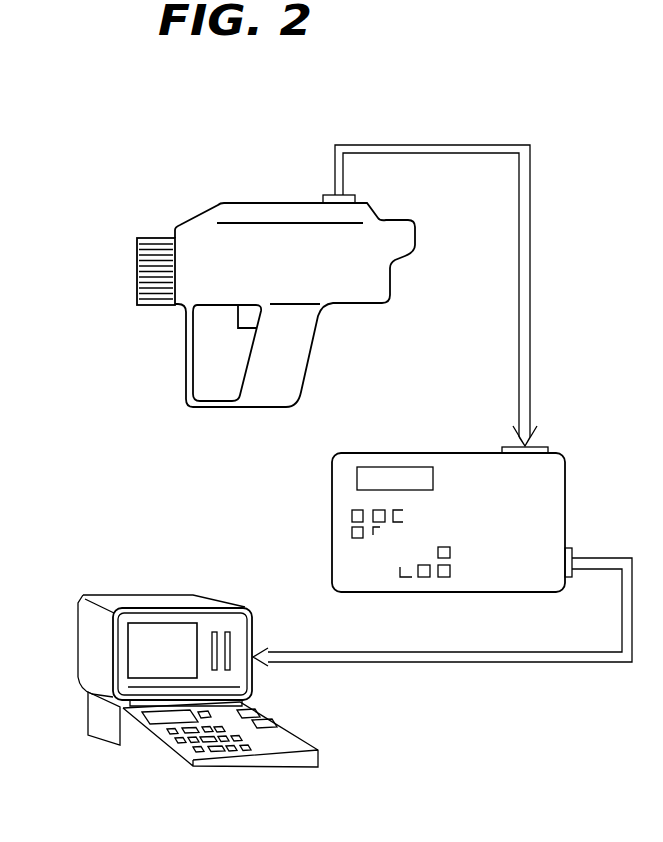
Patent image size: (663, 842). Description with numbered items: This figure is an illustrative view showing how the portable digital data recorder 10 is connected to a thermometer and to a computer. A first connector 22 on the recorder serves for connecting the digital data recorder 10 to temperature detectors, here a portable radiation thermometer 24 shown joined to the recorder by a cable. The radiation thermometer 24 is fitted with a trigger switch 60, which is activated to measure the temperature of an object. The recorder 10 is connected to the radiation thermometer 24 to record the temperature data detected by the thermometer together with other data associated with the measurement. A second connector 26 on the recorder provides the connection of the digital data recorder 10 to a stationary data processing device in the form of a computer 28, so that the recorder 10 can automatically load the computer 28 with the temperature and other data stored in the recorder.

The digital data recorder 10 is at (550, 527).
The first connector 22 is at (538, 446).
The radiation thermometer 24 is at (375, 223).
The second connector 26 is at (567, 578).
The computer 28 is at (72, 692).
The trigger switch 60 is at (245, 317).